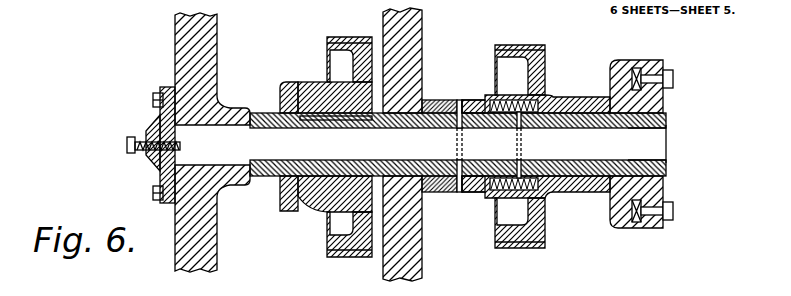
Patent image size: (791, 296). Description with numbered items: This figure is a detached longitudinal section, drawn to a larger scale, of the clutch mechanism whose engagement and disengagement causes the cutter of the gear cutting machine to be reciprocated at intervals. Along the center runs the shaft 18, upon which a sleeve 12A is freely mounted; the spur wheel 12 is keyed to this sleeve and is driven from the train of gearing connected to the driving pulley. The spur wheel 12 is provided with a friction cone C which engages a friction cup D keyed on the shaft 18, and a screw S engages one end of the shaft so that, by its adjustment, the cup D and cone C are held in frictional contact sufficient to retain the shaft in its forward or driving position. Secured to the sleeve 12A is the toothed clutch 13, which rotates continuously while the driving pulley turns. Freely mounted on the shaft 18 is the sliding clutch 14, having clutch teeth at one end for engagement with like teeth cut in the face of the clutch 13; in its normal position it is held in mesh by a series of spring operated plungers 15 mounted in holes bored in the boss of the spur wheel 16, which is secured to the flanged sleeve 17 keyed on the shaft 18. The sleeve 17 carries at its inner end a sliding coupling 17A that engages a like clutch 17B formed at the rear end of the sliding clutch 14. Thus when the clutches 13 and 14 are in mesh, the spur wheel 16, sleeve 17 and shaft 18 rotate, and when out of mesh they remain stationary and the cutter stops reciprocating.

The screw S is at (128, 145).
The spur wheel 12 is at (343, 40).
The sleeve 12A is at (325, 118).
The toothed clutch 13 is at (436, 74).
The sliding clutch 14 is at (458, 101).
The spring operated plungers 15 is at (484, 95).
The spur wheel 16 is at (523, 235).
The flanged sleeve 17 is at (573, 97).
The sliding coupling 17A is at (530, 167).
The clutch 17B is at (510, 170).
The shaft 18 is at (680, 146).
The friction cup D is at (290, 205).
The friction cone C is at (330, 195).